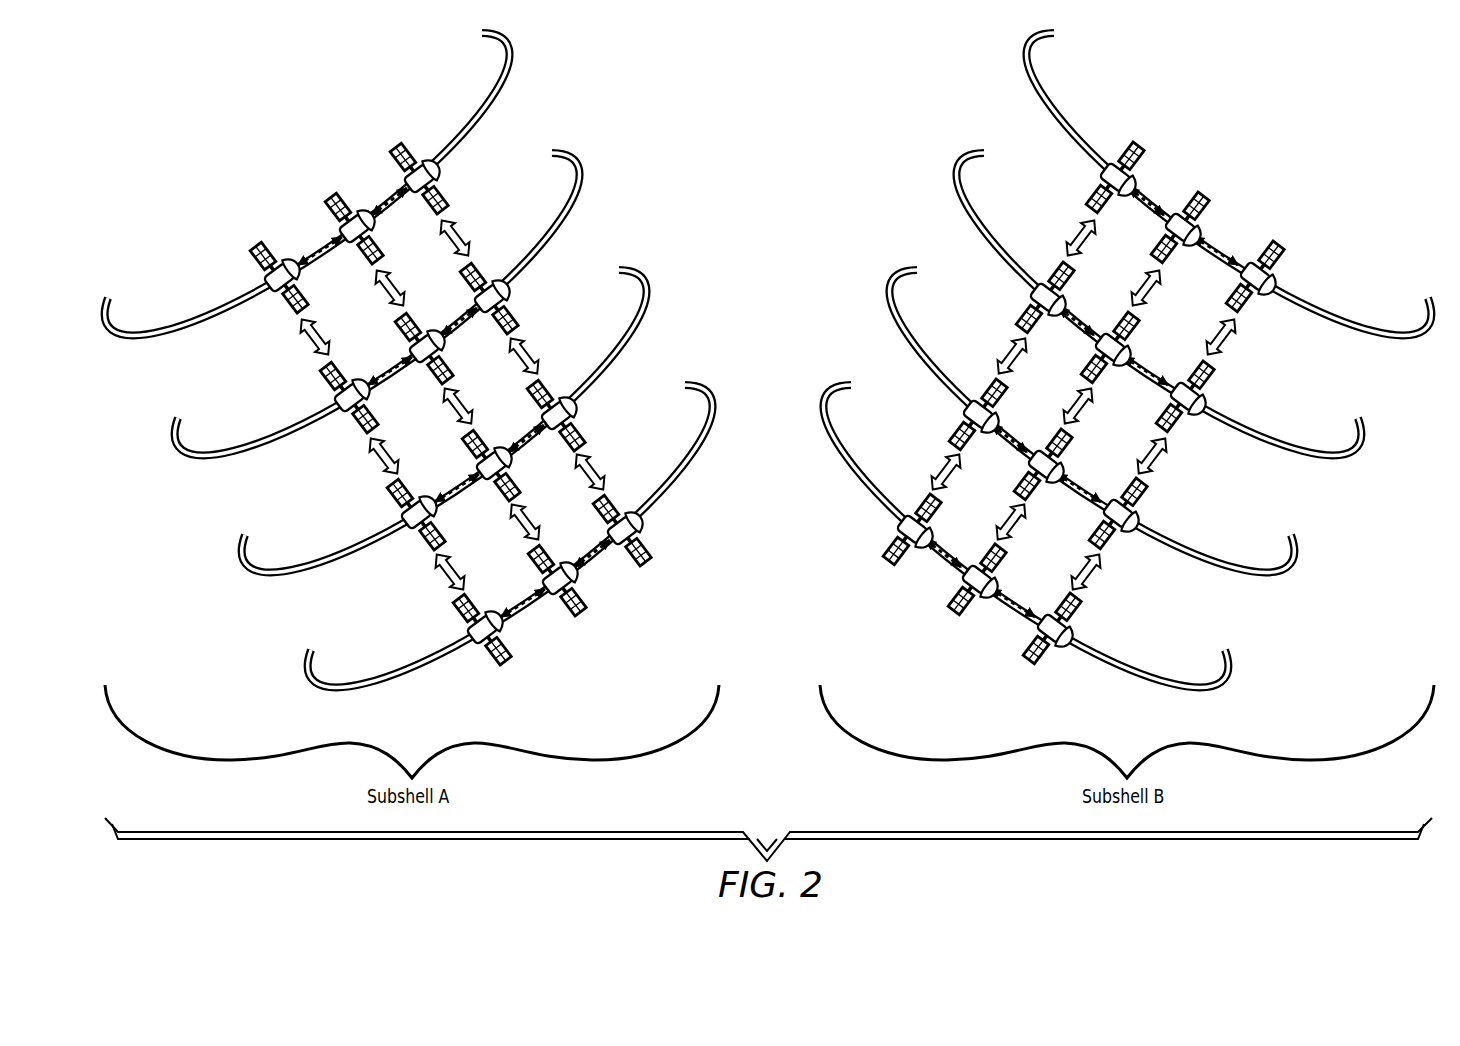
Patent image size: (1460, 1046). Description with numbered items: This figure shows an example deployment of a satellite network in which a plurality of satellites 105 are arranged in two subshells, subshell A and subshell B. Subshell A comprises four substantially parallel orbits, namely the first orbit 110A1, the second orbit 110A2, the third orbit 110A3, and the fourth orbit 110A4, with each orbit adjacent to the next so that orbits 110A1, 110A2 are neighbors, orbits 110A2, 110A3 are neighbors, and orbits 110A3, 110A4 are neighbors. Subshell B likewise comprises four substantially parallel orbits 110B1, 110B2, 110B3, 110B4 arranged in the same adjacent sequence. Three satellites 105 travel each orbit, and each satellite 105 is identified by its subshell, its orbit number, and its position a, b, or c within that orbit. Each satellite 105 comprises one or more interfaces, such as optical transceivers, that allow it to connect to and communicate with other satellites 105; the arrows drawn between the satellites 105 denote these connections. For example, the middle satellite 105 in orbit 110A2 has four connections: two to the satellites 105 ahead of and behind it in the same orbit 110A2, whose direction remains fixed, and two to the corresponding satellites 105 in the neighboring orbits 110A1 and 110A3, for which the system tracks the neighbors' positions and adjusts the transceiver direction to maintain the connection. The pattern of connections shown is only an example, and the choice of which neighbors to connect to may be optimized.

The satellite 105 is at (767, 403).
The first orbit in subshell A 110A1 is at (174, 335).
The second orbit in subshell A 110A2 is at (192, 453).
The third orbit in subshell A 110A3 is at (260, 570).
The fourth orbit in subshell A 110A4 is at (314, 676).
The first orbit in subshell B 110B1 is at (1362, 335).
The second orbit in subshell B 110B2 is at (1344, 453).
The third orbit in subshell B 110B3 is at (1276, 570).
The fourth orbit in subshell B 110B4 is at (1222, 676).